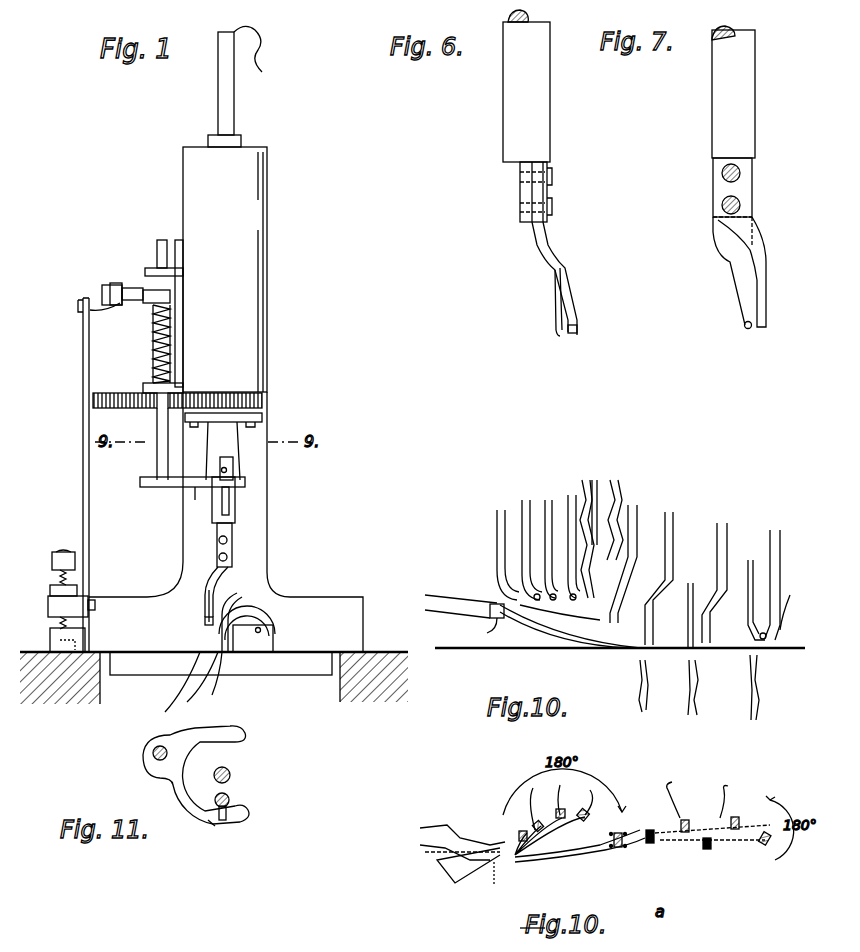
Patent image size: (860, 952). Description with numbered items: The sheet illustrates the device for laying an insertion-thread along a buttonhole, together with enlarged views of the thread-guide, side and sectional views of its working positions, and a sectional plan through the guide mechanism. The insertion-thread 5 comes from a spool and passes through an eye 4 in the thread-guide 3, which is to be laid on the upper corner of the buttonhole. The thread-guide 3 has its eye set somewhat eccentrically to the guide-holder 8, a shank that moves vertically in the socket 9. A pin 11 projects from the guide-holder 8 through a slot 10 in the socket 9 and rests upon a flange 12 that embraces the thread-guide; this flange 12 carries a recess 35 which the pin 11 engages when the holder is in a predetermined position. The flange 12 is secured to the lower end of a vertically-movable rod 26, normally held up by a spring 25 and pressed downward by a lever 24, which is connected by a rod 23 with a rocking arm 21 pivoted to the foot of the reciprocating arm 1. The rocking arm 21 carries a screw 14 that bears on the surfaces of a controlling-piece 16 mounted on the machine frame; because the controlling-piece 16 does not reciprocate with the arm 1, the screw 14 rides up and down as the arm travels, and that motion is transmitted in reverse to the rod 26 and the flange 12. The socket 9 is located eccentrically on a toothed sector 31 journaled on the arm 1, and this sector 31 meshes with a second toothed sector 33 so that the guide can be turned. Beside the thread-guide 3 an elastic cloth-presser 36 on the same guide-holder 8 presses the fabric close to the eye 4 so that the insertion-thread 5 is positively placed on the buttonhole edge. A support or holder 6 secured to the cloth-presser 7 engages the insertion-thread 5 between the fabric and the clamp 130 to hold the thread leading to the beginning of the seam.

In FIG. 1, the arm 1 is at (247, 245).
In FIG. 1, the thread-guide 3 is at (220, 578).
In FIG. 6, the thread-guide 3 is at (566, 277).
In FIG. 7, the thread-guide 3 is at (738, 266).
In FIG. 10, the thread-guide 3 is at (795, 532).
In FIG. 10A, the thread-guide 3 is at (655, 845).
In FIG. 1, the eye 4 is at (212, 625).
In FIG. 6, the eye 4 is at (578, 330).
In FIG. 7, the eye 4 is at (748, 330).
In FIG. 10, the eye 4 is at (576, 600).
In FIG. 10A, the eye 4 is at (712, 848).
In FIG. 1, the insertion-thread 5 is at (235, 595).
In FIG. 10, the insertion-thread 5 is at (790, 600).
In FIG. 10A, the insertion-thread 5 is at (604, 850).
In FIG. 1, the support or holder 6 is at (265, 618).
In FIG. 1, the cloth-clamp or cloth-presser 7 is at (257, 640).
In FIG. 1, the guide-holder 8 is at (230, 527).
In FIG. 11, the guide-holder 8 is at (236, 805).
In FIG. 6, the guide-holder 8 is at (540, 93).
In FIG. 7, the guide-holder 8 is at (747, 103).
In FIG. 1, the socket 9 is at (230, 442).
In FIG. 11, the socket 9 is at (230, 795).
In FIG. 1, the slot 10 is at (232, 503).
In FIG. 1, the pin 11 is at (245, 468).
In FIG. 11, the pin 11 is at (222, 820).
In FIG. 1, the flange 12 is at (195, 500).
In FIG. 11, the flange 12 is at (200, 740).
In FIG. 1, the screw 14 is at (58, 625).
In FIG. 1, the controlling-piece 16 is at (55, 650).
In FIG. 1, the rocking arm 21 is at (95, 607).
In FIG. 1, the rod 23 is at (90, 510).
In FIG. 1, the lever 24 is at (97, 300).
In FIG. 1, the spring 25 is at (153, 347).
In FIG. 1, the vertically-movable rod 26 is at (157, 460).
In FIG. 11, the vertically-movable rod 26 is at (158, 760).
In FIG. 1, the toothed sector 31 is at (262, 401).
In FIG. 1, the toothed sector 33 is at (113, 393).
In FIG. 11, the recess 35 is at (200, 812).
In FIG. 1, the elastic cloth-presser 36 is at (208, 603).
In FIG. 6, the elastic cloth-presser 36 is at (556, 304).
In FIG. 7, the elastic cloth-presser 36 is at (762, 265).
In FIG. 10, the clamp 130 is at (455, 603).
In FIG. 10A, the clamp 130 is at (450, 868).